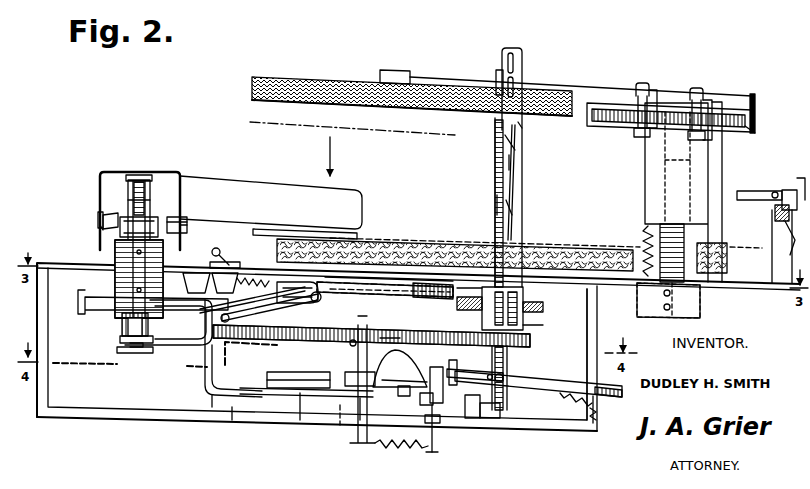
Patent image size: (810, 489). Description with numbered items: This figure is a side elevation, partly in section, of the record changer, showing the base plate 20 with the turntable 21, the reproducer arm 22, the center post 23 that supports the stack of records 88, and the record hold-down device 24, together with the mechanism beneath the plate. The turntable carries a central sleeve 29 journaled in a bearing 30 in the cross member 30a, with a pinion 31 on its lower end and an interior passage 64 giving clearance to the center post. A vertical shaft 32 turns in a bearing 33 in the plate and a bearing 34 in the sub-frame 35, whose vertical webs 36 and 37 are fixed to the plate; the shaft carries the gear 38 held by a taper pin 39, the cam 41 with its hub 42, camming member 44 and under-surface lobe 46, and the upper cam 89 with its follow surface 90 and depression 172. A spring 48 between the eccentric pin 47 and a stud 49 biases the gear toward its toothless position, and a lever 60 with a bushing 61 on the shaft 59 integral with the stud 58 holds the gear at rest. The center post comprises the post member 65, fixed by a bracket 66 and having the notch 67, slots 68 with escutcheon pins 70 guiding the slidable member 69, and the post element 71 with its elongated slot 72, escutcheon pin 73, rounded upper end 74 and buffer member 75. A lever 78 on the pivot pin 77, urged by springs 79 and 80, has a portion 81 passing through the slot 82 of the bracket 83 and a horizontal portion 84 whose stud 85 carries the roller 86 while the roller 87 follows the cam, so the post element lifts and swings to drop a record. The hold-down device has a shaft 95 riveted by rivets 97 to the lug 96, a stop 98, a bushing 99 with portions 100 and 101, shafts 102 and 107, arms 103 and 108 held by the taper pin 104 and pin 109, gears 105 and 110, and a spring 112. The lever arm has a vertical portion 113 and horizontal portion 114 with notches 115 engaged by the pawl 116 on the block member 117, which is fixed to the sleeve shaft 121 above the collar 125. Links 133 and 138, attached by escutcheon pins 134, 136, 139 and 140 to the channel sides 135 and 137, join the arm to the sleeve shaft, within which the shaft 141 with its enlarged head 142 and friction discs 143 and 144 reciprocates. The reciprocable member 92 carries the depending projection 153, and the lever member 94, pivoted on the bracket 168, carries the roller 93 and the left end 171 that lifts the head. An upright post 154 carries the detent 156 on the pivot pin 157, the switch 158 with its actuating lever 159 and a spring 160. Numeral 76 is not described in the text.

The base plate 20 is at (54, 261).
The turntable 21 is at (276, 250).
The reproducer arm 22 is at (206, 174).
The center post 23 is at (493, 178).
The record hold-down device 24 is at (644, 168).
The central sleeve 29 is at (524, 296).
The bearing 30 is at (525, 312).
The cross member 30a is at (575, 245).
The pinion 31 is at (532, 340).
The vertical shaft 32 is at (360, 316).
The bearing 33 is at (372, 270).
The bearing 34 is at (330, 420).
The sub-frame 35 is at (170, 420).
The vertical web 36 is at (49, 386).
The vertical web 37 is at (598, 330).
The gear 38 is at (392, 340).
The taper pin 39 is at (349, 343).
The cam 41 is at (398, 388).
The hub 42 is at (344, 375).
The camming member 44 is at (396, 362).
The lobe 46 is at (290, 372).
The pin 47 is at (349, 443).
The spring 48 is at (380, 445).
The stud 49 is at (434, 447).
The stud 58 is at (232, 420).
The shaft 59 is at (240, 370).
The lever 60 is at (295, 394).
The bushing 61 is at (218, 394).
The interior passage 64 is at (480, 306).
The post member 65 is at (495, 142).
The bracket 66 is at (498, 418).
The notch 67 is at (497, 120).
The slots 68 is at (519, 60).
The slidable member 69 is at (522, 82).
The escutcheon pins 70 is at (496, 76).
The post element 71 is at (513, 210).
The elongated slot 72 is at (513, 185).
The escutcheon pin 73 is at (495, 206).
The upper end 74 is at (523, 128).
The buffer member 75 is at (516, 162).
The link 76 is at (516, 142).
The pivot pin 77 is at (486, 370).
The lever 78 is at (566, 382).
The spring 79 is at (598, 411).
The spring 80 is at (571, 404).
The portion 81 is at (449, 368).
The slot 82 is at (488, 375).
The bracket 83 is at (477, 418).
The horizontal portion 84 is at (436, 412).
The stud 85 is at (428, 422).
The roller 86 is at (431, 372).
The roller 87 is at (420, 398).
The stack of records 88 is at (341, 75).
The cam 89 is at (402, 282).
The follow surface 90 is at (450, 284).
The reciprocable member 92 is at (295, 280).
The roller 93 is at (305, 300).
The lever member 94 is at (282, 309).
The shaft 95 is at (745, 195).
The lug 96 is at (701, 300).
The rivets 97 is at (664, 306).
The stop 98 is at (686, 250).
The bushing 99 is at (653, 180).
The portion 100 is at (757, 124).
The flat portion 101 is at (757, 102).
The shaft 102 is at (699, 88).
The arm 103 is at (600, 92).
The taper pin 104 is at (710, 100).
The gear 105 is at (714, 118).
The shaft 107 is at (654, 90).
The arm 108 is at (397, 70).
The pin 109 is at (640, 83).
The gear 110 is at (612, 125).
The spring 112 is at (645, 230).
The portion 113 is at (204, 370).
The horizontal portion 114 is at (198, 334).
The notches 115 is at (175, 312).
The pawl 116 is at (148, 314).
The block member 117 is at (97, 305).
The sleeve shaft 121 is at (151, 216).
The collar 125 is at (120, 325).
The link member 133 is at (120, 214).
The escutcheon pin 134 is at (130, 177).
The channel side 135 is at (98, 224).
The escutcheon pin 136 is at (99, 215).
The channel side 137 is at (183, 240).
The link member 138 is at (187, 214).
The escutcheon pin 139 is at (216, 218).
The escutcheon pin 140 is at (178, 217).
The shaft 141 is at (150, 190).
The enlarged head 142 is at (110, 340).
The friction disc 143 is at (140, 176).
The friction disc 144 is at (130, 354).
The depending projection 153 is at (78, 300).
The upright post 154 is at (730, 252).
The detent 156 is at (760, 190).
The pivot pin 157 is at (790, 190).
The switch 158 is at (800, 195).
The actuating lever 159 is at (774, 207).
The spring 160 is at (784, 215).
The bracket 168 is at (221, 262).
The left end 171 is at (153, 354).
The depression 172 is at (320, 282).